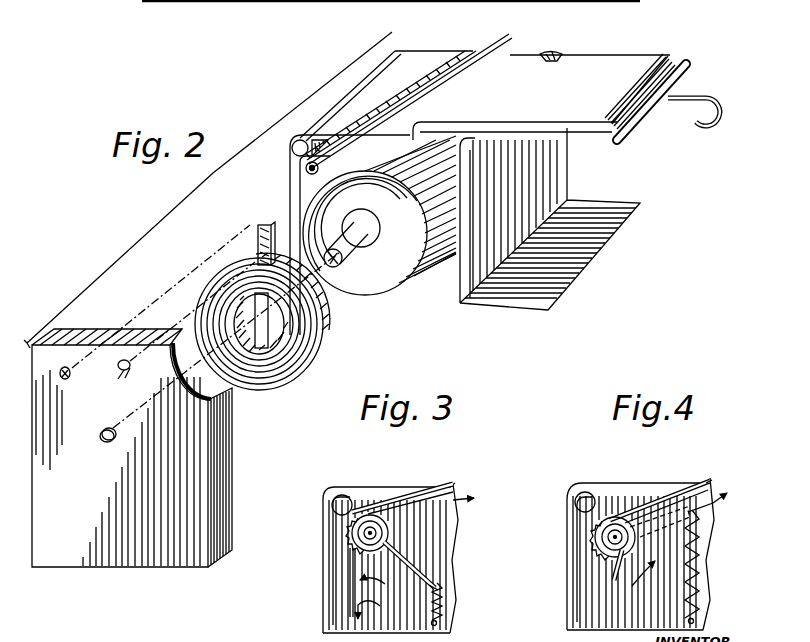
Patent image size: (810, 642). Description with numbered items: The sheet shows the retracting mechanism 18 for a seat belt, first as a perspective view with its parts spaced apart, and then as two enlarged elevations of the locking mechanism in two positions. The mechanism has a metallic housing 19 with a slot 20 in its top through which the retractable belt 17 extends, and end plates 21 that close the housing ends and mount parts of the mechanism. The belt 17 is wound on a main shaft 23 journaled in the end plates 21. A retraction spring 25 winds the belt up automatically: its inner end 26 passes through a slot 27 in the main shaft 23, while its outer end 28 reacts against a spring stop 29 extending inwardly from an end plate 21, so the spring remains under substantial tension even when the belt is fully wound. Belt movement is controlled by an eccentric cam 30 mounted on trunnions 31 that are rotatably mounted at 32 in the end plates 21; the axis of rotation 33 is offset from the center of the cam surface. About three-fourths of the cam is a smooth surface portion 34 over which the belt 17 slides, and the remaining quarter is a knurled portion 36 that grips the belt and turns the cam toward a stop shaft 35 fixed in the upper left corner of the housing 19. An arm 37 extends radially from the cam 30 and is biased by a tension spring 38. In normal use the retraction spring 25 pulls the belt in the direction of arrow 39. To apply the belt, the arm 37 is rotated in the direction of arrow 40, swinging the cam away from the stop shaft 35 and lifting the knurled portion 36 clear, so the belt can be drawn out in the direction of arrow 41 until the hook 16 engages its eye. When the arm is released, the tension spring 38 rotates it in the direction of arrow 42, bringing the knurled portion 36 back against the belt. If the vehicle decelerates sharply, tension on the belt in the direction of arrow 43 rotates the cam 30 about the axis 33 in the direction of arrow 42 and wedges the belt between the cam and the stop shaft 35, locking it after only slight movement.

In FIG. 2, the hook 16 is at (720, 105).
In FIG. 2, the retractable belt 17 is at (617, 54).
In FIG. 3, the retractable belt 17 is at (405, 500).
In FIG. 4, the retractable belt 17 is at (657, 500).
In FIG. 2, the retracting mechanism 18 is at (273, 106).
In FIG. 2, the metallic housing 19 is at (447, 52).
In FIG. 2, the slot 20 is at (520, 51).
In FIG. 2, the end plates 21 is at (197, 454).
In FIG. 3, the end plates 21 is at (443, 522).
In FIG. 4, the end plates 21 is at (712, 532).
In FIG. 2, the main shaft 23 is at (370, 240).
In FIG. 2, the retraction spring 25 is at (318, 344).
In FIG. 2, the inner end 26 is at (270, 353).
In FIG. 2, the slot 27 is at (107, 443).
In FIG. 2, the outer end 28 is at (257, 236).
In FIG. 2, the spring stop 29 is at (121, 378).
In FIG. 2, the eccentric cam 30 is at (337, 153).
In FIG. 3, the eccentric cam 30 is at (387, 518).
In FIG. 4, the eccentric cam 30 is at (618, 527).
In FIG. 2, the trunnions 31 is at (306, 170).
In FIG. 3, the trunnions 31 is at (393, 546).
In FIG. 4, the trunnions 31 is at (620, 550).
In FIG. 2, the trunnion mounting 32 is at (65, 381).
In FIG. 3, the axis of rotation 33 is at (390, 533).
In FIG. 4, the axis of rotation 33 is at (630, 538).
In FIG. 3, the smooth surface portion 34 is at (366, 514).
In FIG. 4, the smooth surface portion 34 is at (610, 519).
In FIG. 2, the stop shaft 35 is at (301, 137).
In FIG. 3, the stop shaft 35 is at (342, 496).
In FIG. 4, the stop shaft 35 is at (585, 492).
In FIG. 3, the knurled portion 36 is at (348, 537).
In FIG. 4, the knurled portion 36 is at (607, 545).
In FIG. 3, the arm 37 is at (433, 575).
In FIG. 4, the arm 37 is at (706, 482).
In FIG. 3, the tension spring 38 is at (447, 600).
In FIG. 4, the tension spring 38 is at (700, 566).
In FIG. 3, the arrow 39 is at (381, 611).
In FIG. 4, the arrow 40 is at (648, 586).
In FIG. 4, the arrow 41 is at (716, 504).
In FIG. 3, the arrow 42 is at (382, 585).
In FIG. 3, the arrow 43 is at (458, 490).